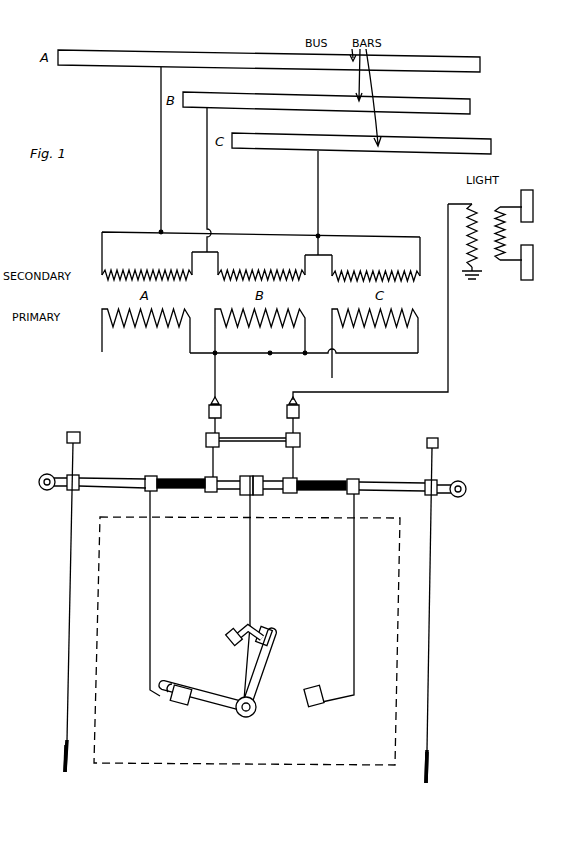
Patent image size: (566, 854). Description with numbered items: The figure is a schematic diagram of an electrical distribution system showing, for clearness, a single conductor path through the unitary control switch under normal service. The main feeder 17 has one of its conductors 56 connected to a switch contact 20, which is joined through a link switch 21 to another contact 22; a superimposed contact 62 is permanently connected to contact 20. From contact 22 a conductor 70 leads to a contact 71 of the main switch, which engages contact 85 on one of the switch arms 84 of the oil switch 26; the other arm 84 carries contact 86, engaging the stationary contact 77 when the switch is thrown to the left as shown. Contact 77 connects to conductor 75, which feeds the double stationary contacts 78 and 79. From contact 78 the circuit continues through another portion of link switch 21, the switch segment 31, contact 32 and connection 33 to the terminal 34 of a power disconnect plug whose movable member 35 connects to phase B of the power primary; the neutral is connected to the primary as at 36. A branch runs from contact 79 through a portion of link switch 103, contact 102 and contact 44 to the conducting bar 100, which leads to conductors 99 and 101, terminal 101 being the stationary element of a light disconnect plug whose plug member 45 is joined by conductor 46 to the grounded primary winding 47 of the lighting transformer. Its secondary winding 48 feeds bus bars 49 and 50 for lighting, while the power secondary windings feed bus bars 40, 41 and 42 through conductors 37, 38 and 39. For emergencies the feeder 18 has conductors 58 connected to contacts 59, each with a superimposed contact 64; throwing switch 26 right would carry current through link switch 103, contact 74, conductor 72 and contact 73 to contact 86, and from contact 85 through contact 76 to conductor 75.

The main feeder 17 is at (65, 758).
The emergency feeder 18 is at (428, 762).
The switch contact 20 is at (66, 489).
The link switch 21 is at (112, 478).
The contact 22 is at (152, 476).
The oil switch 26 is at (247, 716).
The switch segment 31 is at (225, 492).
The contact 32 is at (204, 489).
The connection 33 is at (218, 457).
The terminal 34 is at (206, 439).
The movable member of disconnect plug 35 is at (248, 394).
The neutral connection 36 is at (270, 353).
The conductor 37 is at (161, 185).
The conductor 38 is at (207, 188).
The conductor 39 is at (318, 192).
The bus bar 40 is at (100, 66).
The bus bar 41 is at (285, 95).
The bus bar 42 is at (305, 134).
The contact 44 is at (300, 440).
The disconnect plug 45 is at (290, 401).
The conductor 46 is at (448, 320).
The primary winding 47 is at (468, 229).
The secondary winding 48 is at (507, 232).
The bus bar 49 is at (529, 190).
The bus bar 50 is at (533, 277).
The conductor 56 is at (70, 562).
The conductor 58 is at (430, 648).
The contact 59 is at (428, 481).
The superimposed contact 62 is at (67, 437).
The superimposed contact 64 is at (432, 438).
The conductor 70 is at (150, 576).
The contact 71 is at (178, 701).
The conductor 72 is at (355, 580).
The contact 73 is at (318, 703).
The contact 74 is at (355, 479).
The conductor 75 is at (252, 578).
The contact 76 is at (231, 631).
The stationary contact 77 is at (274, 641).
The stationary contact 78 is at (245, 496).
The stationary contact 79 is at (262, 496).
The switch arm 84 is at (259, 667).
The contact 85 is at (170, 682).
The contact 86 is at (270, 629).
The conductor 99 is at (210, 428).
The conducting bar 100 is at (250, 438).
The terminal 101 is at (299, 429).
The contact 102 is at (294, 478).
The link switch 103 is at (458, 498).